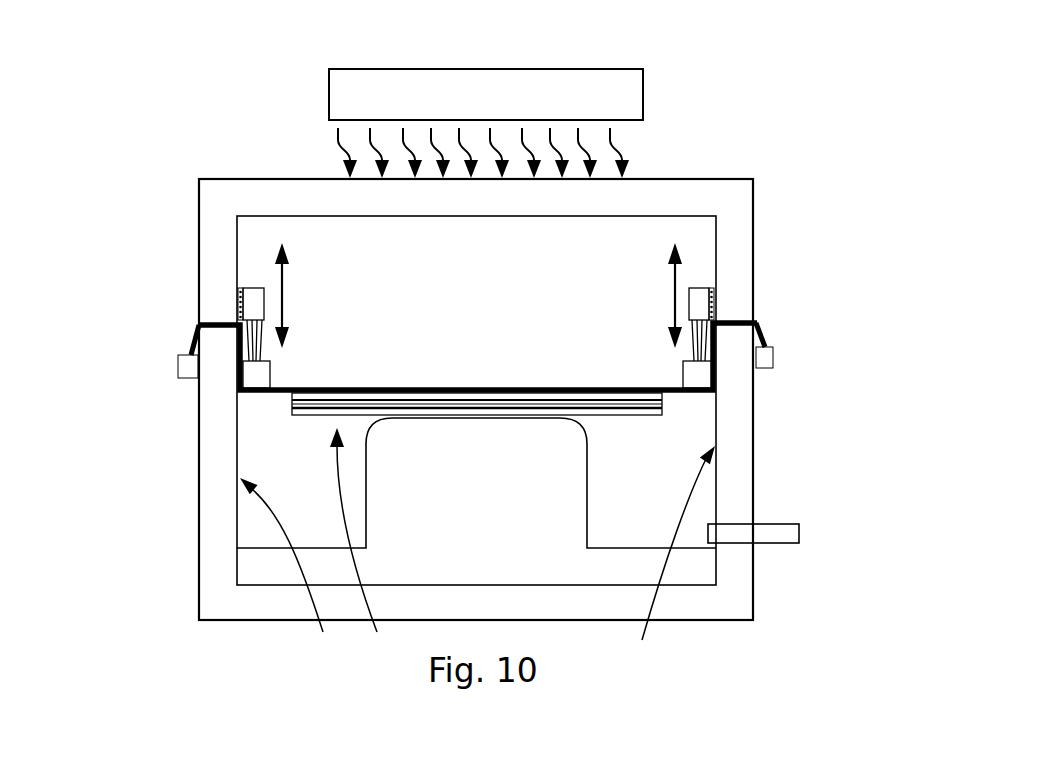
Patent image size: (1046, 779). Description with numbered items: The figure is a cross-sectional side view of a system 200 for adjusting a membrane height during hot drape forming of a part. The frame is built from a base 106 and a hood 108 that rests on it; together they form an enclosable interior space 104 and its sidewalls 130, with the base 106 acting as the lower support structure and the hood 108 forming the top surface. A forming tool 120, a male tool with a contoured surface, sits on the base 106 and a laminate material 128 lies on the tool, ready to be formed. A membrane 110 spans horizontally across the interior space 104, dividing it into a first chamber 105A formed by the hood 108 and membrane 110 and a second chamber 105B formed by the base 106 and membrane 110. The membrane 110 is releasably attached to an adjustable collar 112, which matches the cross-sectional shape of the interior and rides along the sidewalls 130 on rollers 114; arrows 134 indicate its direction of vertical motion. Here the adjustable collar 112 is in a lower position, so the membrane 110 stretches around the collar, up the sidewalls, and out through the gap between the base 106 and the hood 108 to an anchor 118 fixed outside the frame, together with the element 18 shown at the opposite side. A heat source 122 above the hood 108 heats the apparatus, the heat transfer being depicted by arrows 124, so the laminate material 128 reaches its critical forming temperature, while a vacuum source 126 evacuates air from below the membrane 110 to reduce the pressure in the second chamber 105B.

The system 200 is at (793, 90).
The hood 108 is at (673, 187).
The base 106 is at (733, 457).
The heat source 122 is at (618, 102).
The arrows 124 is at (612, 141).
The membrane 110 is at (366, 388).
The connector 18 is at (187, 369).
The anchor 118 is at (765, 362).
The adjustable collar 112 is at (242, 293).
The rollers 114 is at (238, 318).
The arrows 134 is at (262, 297).
The laminate material 128 is at (477, 527).
The forming tool 120 is at (255, 571).
The vacuum source 126 is at (783, 533).
The sidewalls 130 is at (477, 558).
The first chamber 105A is at (468, 272).
The interior space 104 is at (466, 331).
The second chamber 105B is at (314, 470).